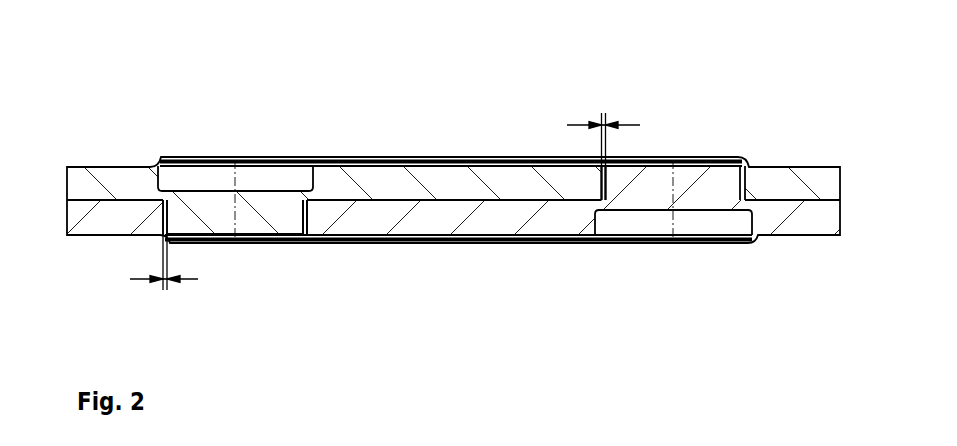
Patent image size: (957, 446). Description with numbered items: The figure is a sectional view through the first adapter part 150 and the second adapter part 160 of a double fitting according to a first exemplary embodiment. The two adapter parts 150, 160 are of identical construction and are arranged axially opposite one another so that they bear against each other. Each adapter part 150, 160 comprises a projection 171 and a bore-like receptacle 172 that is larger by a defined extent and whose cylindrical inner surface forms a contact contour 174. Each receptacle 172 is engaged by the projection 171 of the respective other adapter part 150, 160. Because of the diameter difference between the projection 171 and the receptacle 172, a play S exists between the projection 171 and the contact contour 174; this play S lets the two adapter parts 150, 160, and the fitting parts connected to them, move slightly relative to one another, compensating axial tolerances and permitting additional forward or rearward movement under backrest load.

The first adapter part 150 is at (797, 183).
The second adapter part 160 is at (812, 222).
The projection 171 is at (718, 180).
The bore-like receptacle 172 is at (742, 182).
The contact contour 174 is at (597, 186).
The play S is at (578, 125).